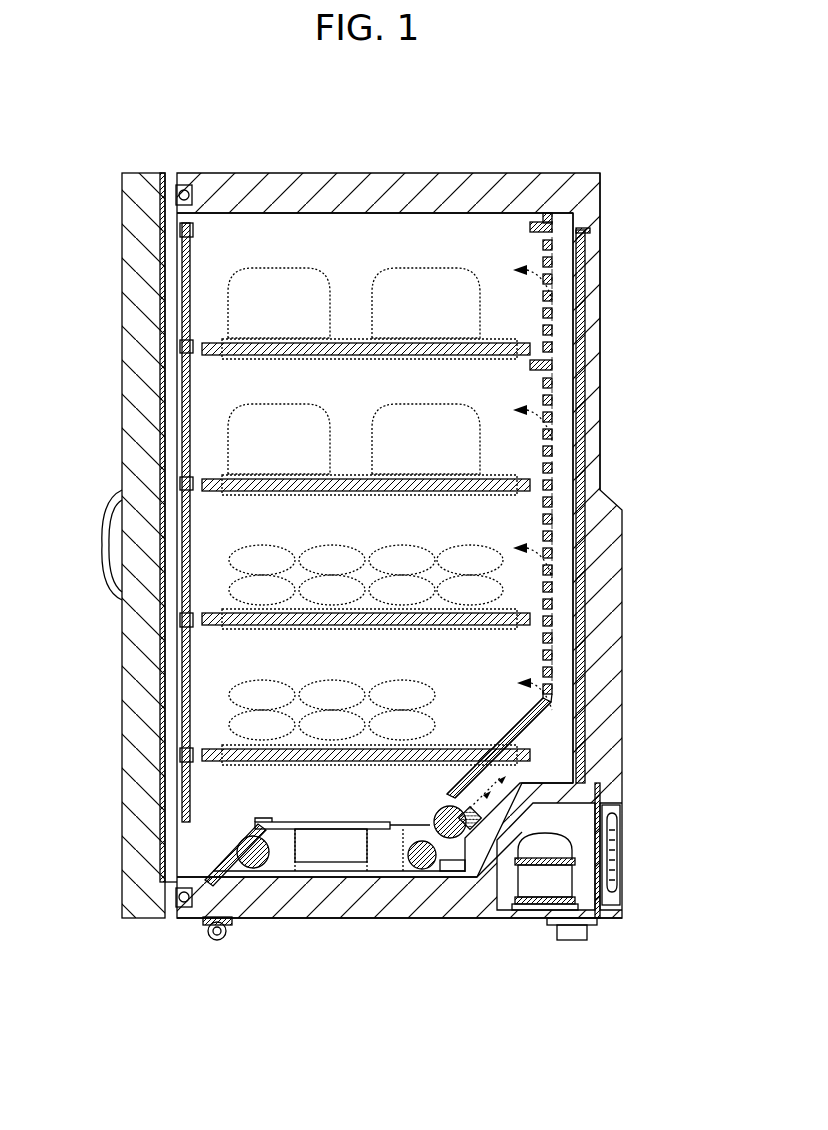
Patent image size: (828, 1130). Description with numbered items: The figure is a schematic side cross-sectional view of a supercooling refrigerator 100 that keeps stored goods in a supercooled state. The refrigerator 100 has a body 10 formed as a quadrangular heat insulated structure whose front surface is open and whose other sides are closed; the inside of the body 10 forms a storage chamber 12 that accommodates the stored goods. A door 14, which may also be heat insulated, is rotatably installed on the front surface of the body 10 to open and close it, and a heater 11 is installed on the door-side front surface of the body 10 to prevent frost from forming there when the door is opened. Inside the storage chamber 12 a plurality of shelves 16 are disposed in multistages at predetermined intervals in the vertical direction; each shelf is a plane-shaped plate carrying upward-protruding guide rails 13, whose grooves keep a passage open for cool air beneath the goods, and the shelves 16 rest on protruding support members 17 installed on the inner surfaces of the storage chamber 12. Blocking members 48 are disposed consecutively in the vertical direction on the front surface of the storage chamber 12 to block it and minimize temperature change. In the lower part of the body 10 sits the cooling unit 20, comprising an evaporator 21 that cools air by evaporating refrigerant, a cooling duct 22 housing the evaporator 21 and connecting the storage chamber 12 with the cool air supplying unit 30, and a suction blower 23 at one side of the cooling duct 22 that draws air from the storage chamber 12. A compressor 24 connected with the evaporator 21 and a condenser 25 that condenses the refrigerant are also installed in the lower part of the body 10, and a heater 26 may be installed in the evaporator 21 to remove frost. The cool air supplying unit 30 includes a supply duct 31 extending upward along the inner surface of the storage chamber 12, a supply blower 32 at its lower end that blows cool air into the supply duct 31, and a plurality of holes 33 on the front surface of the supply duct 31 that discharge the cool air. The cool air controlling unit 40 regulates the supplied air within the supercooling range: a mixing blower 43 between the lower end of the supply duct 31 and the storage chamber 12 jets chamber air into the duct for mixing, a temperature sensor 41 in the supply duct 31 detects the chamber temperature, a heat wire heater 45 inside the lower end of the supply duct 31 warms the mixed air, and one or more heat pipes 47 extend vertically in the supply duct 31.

The refrigerator 100 is at (352, 88).
The body 10 is at (513, 170).
The heater 11 is at (183, 188).
The storage chamber 12 is at (388, 240).
The guide rails 13 is at (205, 345).
The door 14 is at (143, 378).
The shelves 16 is at (180, 348).
The support members 17 is at (222, 350).
The cooling unit 20 is at (327, 882).
The evaporator 21 is at (350, 864).
The cooling duct 22 is at (292, 858).
The suction blower 23 is at (205, 876).
The compressor 24 is at (540, 880).
The condenser 25 is at (620, 862).
The heater 26 is at (307, 890).
The cool air supplying unit 30 is at (562, 752).
The supply duct 31 is at (562, 628).
The supply blower 32 is at (418, 868).
The holes 33 is at (566, 578).
The cool air controlling unit 40 is at (427, 882).
The temperature sensor 41 is at (553, 352).
The mixing blower 43 is at (440, 815).
The heater 45 is at (500, 790).
The heat pipes 47 is at (583, 440).
The blocking members 48 is at (180, 268).